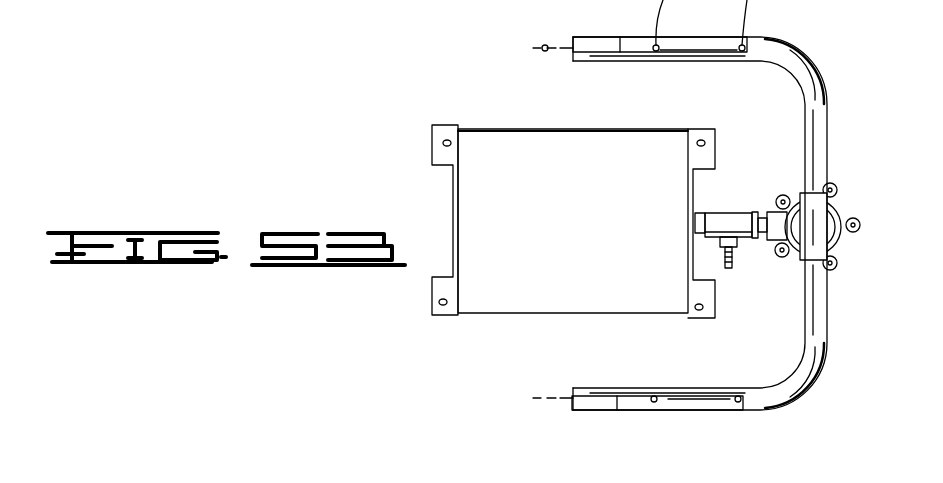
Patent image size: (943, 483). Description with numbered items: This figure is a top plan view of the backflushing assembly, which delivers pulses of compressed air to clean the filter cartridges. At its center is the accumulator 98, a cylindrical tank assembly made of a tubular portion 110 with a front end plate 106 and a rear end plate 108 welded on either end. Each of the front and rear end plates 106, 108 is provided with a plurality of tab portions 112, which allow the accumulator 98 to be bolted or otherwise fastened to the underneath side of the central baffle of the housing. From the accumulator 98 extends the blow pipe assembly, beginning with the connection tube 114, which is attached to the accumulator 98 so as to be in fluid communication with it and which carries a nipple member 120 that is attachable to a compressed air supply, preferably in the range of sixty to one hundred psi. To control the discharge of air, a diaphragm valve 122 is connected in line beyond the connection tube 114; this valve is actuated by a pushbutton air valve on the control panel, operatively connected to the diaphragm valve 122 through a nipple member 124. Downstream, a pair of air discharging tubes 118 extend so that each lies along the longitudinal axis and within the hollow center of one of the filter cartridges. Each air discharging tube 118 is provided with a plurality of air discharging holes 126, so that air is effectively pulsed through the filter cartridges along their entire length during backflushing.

The accumulator 98 is at (508, 128).
The front end plate 106 is at (453, 217).
The rear end plate 108 is at (693, 173).
The tubular portion 110 is at (562, 128).
The tab portions 112 is at (430, 153).
The connection tube 114 is at (713, 212).
The air discharging tubes 118 is at (800, 63).
The nipple member 120 is at (730, 262).
The diaphragm valve 122 is at (838, 197).
The nipple member 124 is at (606, 205).
The air discharging holes 126 is at (546, 44).